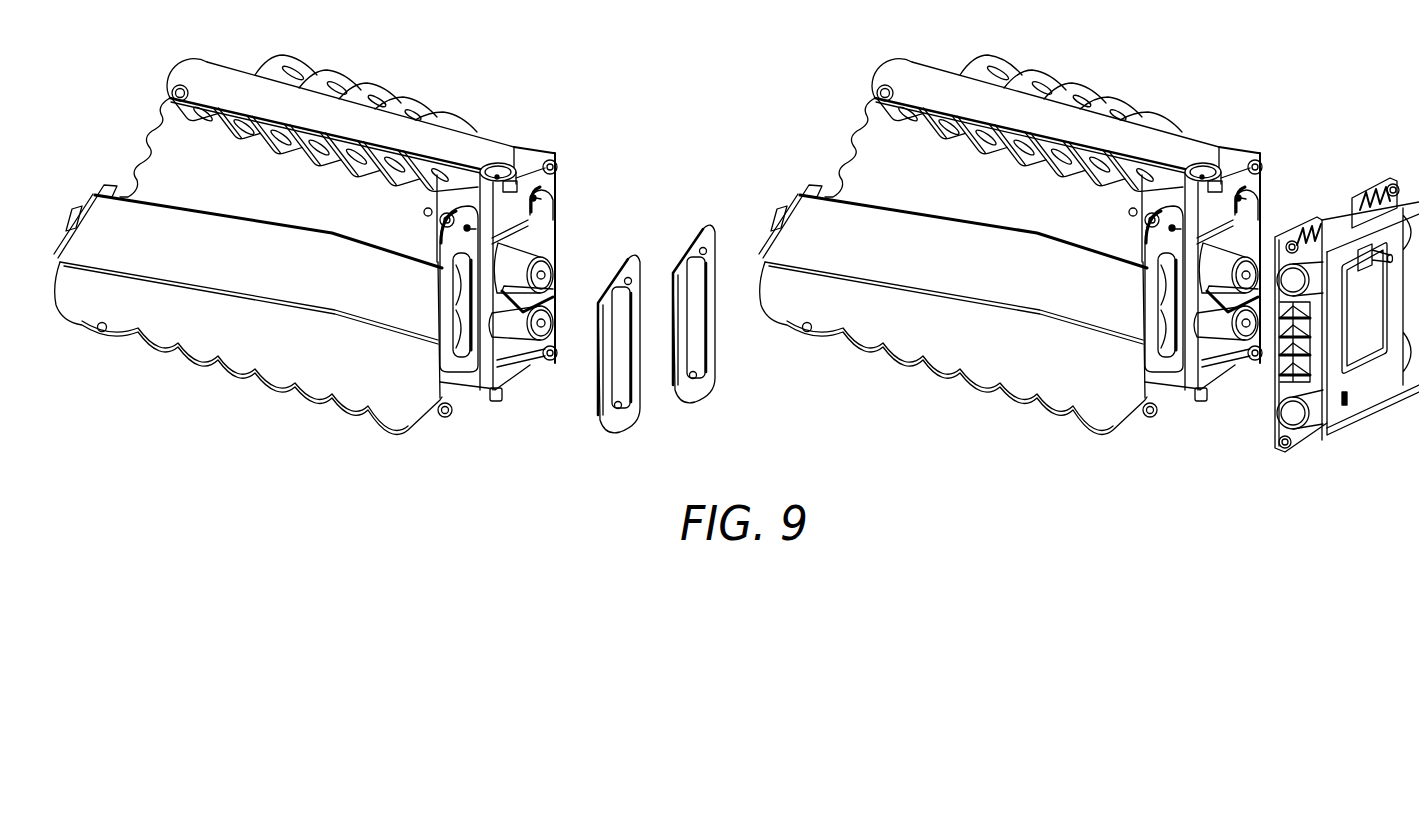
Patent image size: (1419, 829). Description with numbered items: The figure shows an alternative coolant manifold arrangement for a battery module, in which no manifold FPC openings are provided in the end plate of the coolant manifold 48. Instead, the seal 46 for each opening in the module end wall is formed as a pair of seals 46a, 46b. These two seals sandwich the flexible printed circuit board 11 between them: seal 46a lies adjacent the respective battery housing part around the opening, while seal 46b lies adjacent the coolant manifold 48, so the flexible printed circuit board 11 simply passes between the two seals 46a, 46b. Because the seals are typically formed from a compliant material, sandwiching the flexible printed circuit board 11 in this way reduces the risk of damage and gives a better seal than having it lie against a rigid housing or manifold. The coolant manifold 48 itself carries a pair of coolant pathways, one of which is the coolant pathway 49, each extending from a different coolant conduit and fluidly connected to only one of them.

The flexible printed circuit board 11 is at (178, 277).
The seal 46 is at (1256, 190).
The seal 46a is at (548, 200).
The seal 46b is at (619, 420).
The coolant manifold 48 is at (1326, 290).
The coolant pathway 49 is at (1275, 385).